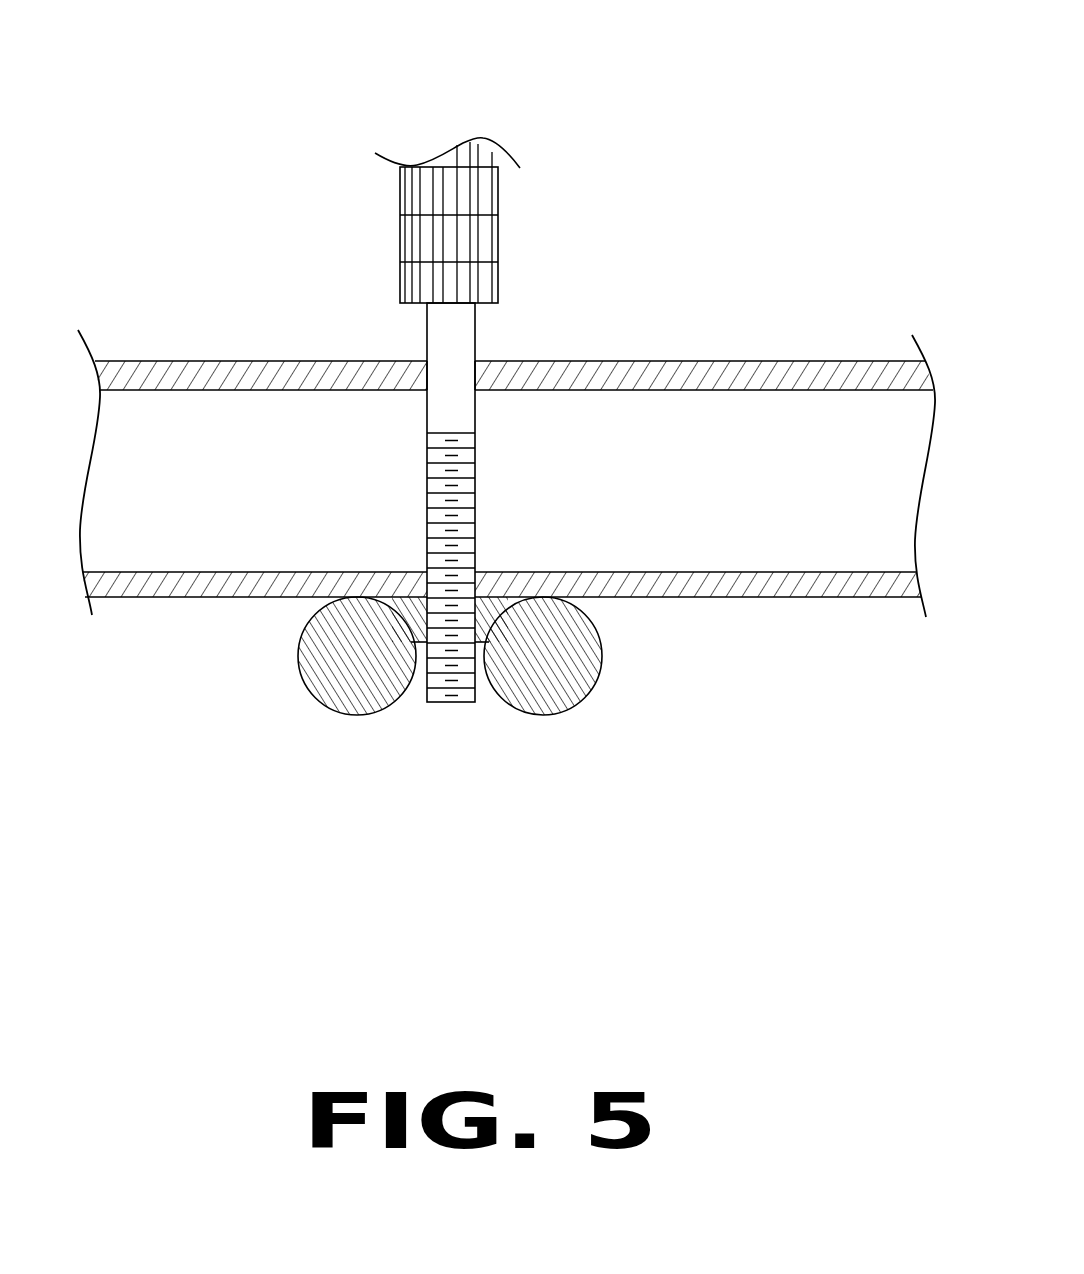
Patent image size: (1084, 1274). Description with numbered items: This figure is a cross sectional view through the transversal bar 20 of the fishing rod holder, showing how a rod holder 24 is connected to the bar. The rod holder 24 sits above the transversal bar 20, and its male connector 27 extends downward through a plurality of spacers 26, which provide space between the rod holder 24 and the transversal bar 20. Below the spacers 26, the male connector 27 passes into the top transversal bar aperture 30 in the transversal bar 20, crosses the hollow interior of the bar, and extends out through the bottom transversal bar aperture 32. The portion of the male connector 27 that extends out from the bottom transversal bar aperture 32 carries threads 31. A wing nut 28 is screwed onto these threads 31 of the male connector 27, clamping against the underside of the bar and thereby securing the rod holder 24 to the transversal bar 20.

The transversal bar 20 is at (655, 360).
The rod holder 24 is at (450, 147).
The spacers 26 is at (403, 287).
The male connector 27 is at (477, 330).
The wing nut 28 is at (348, 710).
The top transversal bar aperture 30 is at (477, 360).
The threads 31 is at (477, 478).
The bottom transversal bar aperture 32 is at (484, 640).